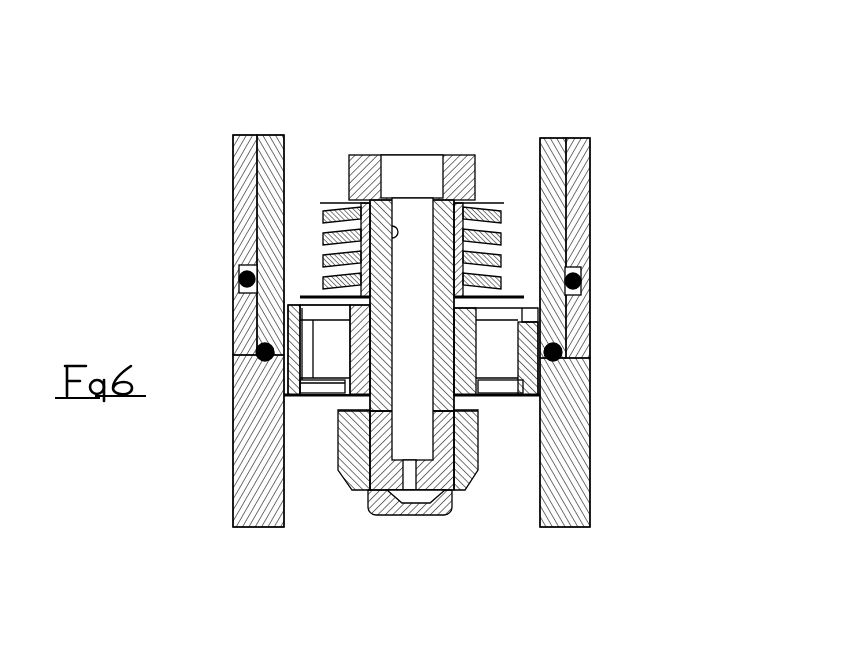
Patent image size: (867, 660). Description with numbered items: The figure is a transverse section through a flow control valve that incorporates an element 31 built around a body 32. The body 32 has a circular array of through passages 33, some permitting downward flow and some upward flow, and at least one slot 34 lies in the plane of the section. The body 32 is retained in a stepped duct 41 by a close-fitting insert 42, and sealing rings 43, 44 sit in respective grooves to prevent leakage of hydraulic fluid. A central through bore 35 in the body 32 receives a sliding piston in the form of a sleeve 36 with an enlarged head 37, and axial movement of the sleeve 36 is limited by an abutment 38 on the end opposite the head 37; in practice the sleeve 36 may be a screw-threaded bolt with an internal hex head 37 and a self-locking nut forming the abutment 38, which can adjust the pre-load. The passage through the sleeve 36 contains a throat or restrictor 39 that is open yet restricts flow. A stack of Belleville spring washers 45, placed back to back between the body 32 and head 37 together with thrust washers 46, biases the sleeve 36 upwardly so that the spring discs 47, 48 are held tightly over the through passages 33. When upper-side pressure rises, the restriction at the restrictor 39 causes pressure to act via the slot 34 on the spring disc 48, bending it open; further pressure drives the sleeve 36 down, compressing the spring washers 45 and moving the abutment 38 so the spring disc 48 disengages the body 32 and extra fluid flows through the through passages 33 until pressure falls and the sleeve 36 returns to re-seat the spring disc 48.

The element 31 is at (597, 352).
The body 32 is at (290, 368).
The through passages 33 is at (330, 346).
The slot 34 is at (539, 298).
The central through bore 35 is at (452, 373).
The sleeve 36 is at (416, 215).
The enlarged head 37 is at (350, 179).
The abutment 38 is at (347, 481).
The restrictor 39 is at (418, 478).
The stepped duct 41 is at (578, 199).
The insert 42 is at (555, 168).
The sealing ring 43 is at (582, 281).
The sealing ring 44 is at (562, 350).
The Belleville spring washers 45 is at (491, 210).
The thrust washers 46 is at (356, 205).
The spring disc 47 is at (526, 301).
The spring disc 48 is at (317, 399).